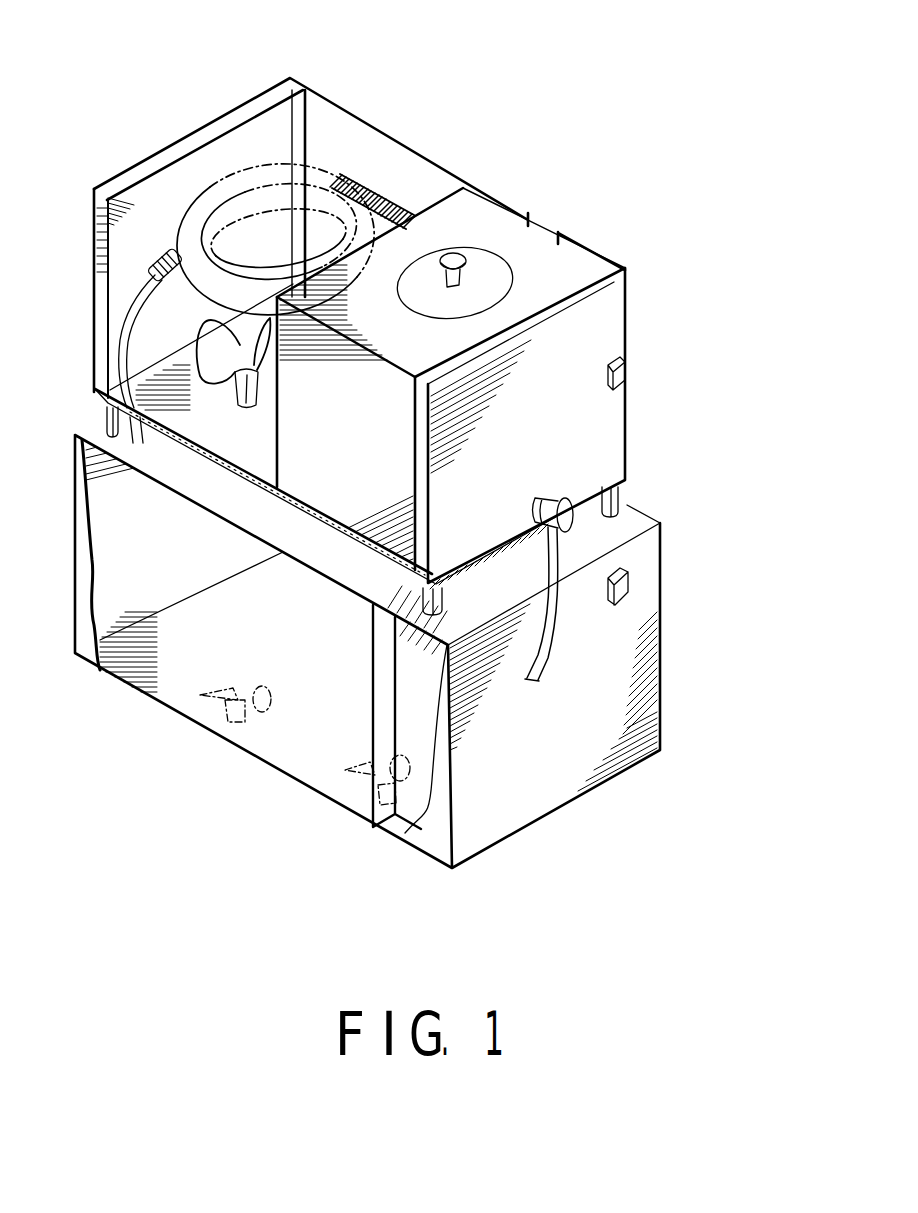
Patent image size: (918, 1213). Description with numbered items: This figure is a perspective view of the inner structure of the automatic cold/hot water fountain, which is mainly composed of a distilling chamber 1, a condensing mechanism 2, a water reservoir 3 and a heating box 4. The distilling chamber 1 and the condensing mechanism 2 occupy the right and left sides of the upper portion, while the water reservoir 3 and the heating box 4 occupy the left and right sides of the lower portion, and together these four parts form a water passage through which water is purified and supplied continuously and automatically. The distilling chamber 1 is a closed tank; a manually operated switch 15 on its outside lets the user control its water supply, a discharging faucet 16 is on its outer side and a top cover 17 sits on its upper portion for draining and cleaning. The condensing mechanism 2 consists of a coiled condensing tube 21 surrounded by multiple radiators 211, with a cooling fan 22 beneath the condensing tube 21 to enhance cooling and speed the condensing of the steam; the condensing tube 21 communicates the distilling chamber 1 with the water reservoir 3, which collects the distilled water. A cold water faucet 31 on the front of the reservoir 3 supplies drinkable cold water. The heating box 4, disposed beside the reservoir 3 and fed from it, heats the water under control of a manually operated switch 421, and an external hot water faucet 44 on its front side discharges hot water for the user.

The distilling chamber 1 is at (580, 270).
The condensing mechanism 2 is at (356, 147).
The condensing tube 21 is at (412, 218).
The radiators 211 is at (389, 192).
The cooling fan 22 is at (240, 400).
The top cover 17 is at (498, 267).
The manually operated switch 15 is at (627, 373).
The discharging faucet 16 is at (575, 512).
The water reservoir 3 is at (170, 653).
The cold water faucet 31 is at (233, 722).
The heating box 4 is at (405, 688).
The hot water faucet 44 is at (375, 808).
The manually operated switch 421 is at (625, 593).